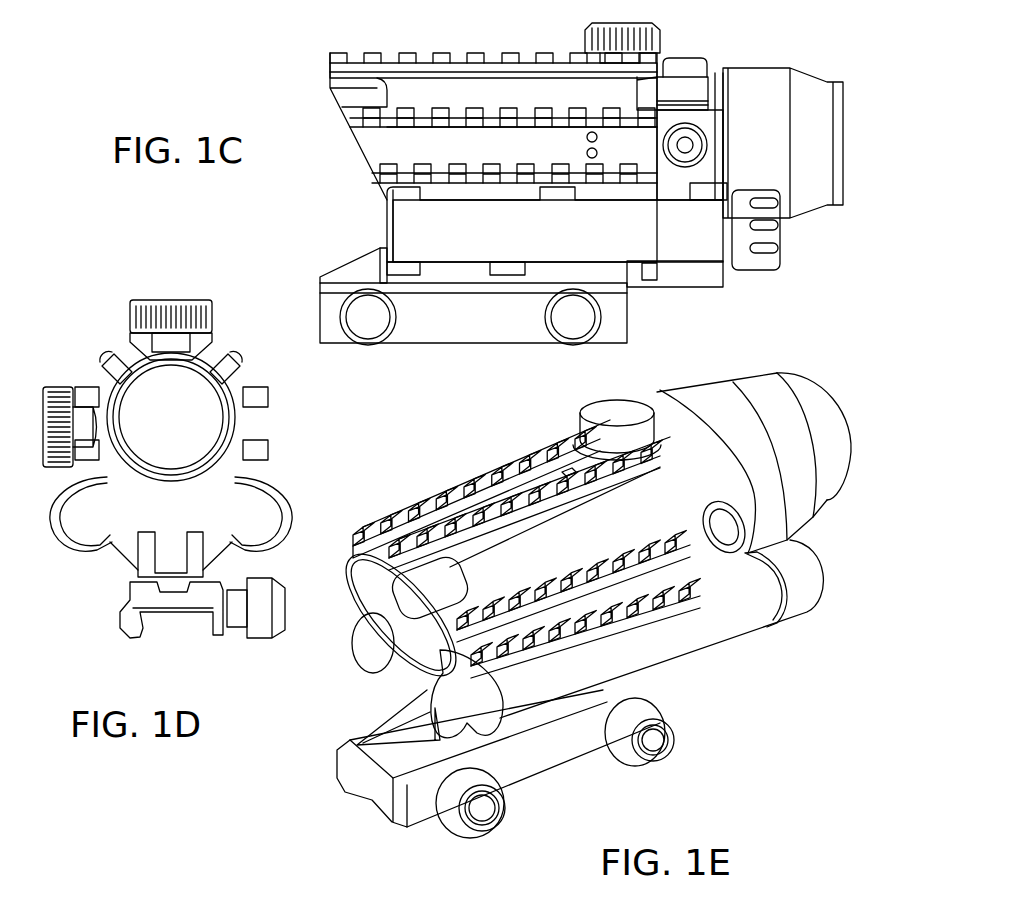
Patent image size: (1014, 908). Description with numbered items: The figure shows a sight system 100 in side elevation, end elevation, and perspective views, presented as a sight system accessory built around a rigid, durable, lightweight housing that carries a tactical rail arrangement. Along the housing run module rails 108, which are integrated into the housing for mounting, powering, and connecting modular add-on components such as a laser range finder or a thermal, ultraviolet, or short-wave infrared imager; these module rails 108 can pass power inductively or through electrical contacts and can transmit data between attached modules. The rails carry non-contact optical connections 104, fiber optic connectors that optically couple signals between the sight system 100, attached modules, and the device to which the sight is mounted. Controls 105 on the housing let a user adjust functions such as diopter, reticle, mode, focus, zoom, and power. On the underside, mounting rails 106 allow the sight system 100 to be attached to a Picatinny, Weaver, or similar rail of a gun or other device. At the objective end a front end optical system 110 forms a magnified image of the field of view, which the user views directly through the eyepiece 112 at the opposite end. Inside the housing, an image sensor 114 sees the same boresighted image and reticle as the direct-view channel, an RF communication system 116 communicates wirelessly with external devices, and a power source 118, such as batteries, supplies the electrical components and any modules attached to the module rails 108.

In FIG. 1C, the sight system 100 is at (262, 82).
In FIG. 1D, the sight system 100 is at (160, 287).
In FIG. 1E, the sight system 100 is at (493, 431).
In FIG. 1C, the non-contact optical connections 104 is at (593, 158).
In FIG. 1E, the non-contact optical connections 104 is at (568, 468).
In FIG. 1C, the controls 105 is at (590, 322).
In FIG. 1C, the mounting rails 106 is at (507, 275).
In FIG. 1C, the module rails 108 is at (380, 58).
In FIG. 1E, the module rails 108 is at (418, 503).
In FIG. 1D, the front end optical system 110 is at (212, 428).
In FIG. 1C, the eyepiece 112 is at (843, 82).
In FIG. 1E, the eyepiece 112 is at (810, 383).
In FIG. 1D, the image sensor 114 is at (132, 503).
In FIG. 1C, the RF communication system 116 is at (487, 52).
In FIG. 1E, the RF communication system 116 is at (462, 477).
In FIG. 1C, the power source 118 is at (423, 220).
In FIG. 1D, the power source 118 is at (84, 522).